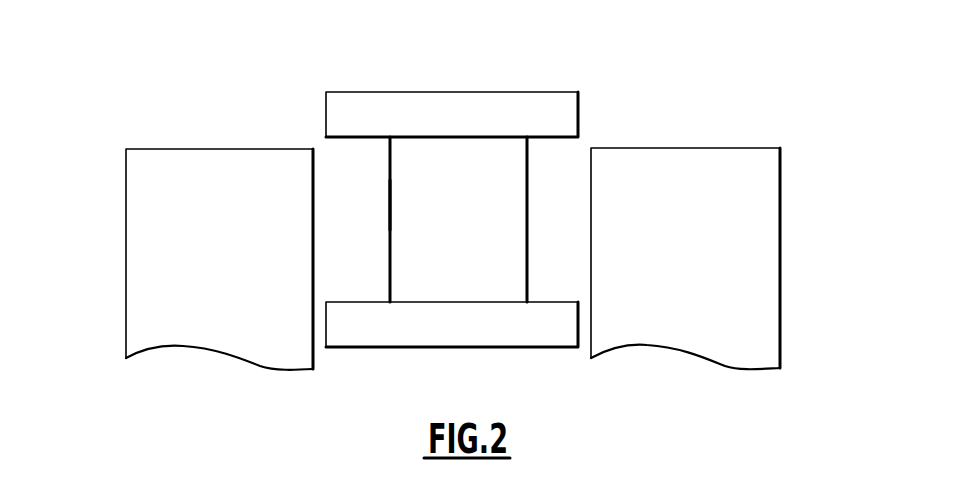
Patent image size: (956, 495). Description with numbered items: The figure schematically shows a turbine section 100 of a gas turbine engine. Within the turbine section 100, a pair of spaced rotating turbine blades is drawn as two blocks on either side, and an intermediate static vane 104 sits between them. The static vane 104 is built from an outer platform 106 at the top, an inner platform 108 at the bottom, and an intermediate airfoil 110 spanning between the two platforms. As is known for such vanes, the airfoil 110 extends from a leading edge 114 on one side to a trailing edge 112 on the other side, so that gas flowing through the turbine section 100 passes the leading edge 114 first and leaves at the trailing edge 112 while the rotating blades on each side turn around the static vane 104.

The turbine section 100 is at (448, 203).
The intermediate static vane 104 is at (610, 76).
The outer platform 106 is at (425, 115).
The inner platform 108 is at (497, 333).
The intermediate airfoil 110 is at (437, 240).
The trailing edge 112 is at (527, 205).
The leading edge 114 is at (390, 204).